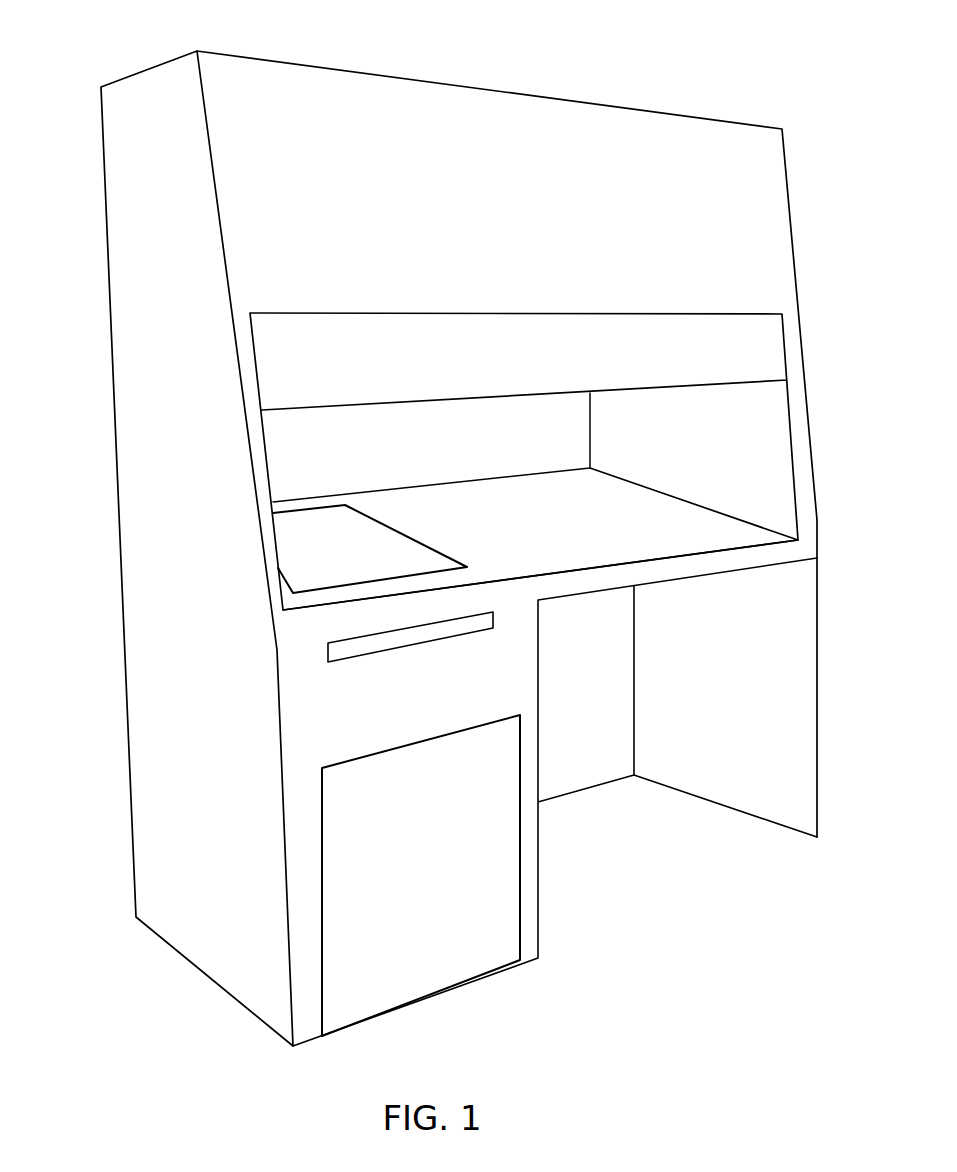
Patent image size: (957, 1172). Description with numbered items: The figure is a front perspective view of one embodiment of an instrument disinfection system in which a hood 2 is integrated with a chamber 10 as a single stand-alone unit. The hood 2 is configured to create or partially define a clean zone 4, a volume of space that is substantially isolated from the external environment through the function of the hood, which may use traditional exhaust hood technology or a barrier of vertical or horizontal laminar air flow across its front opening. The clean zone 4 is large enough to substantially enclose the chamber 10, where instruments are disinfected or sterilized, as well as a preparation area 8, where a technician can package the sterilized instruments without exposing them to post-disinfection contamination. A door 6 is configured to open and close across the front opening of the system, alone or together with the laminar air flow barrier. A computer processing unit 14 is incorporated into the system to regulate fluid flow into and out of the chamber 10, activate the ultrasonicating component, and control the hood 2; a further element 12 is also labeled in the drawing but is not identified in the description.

The hood 2 is at (563, 187).
The door 6 is at (712, 348).
The clean zone 4 is at (547, 462).
The preparation area 8 is at (625, 540).
The chamber 10 is at (337, 537).
The computer processing unit 14 is at (415, 637).
The cabinet door 12 is at (380, 845).